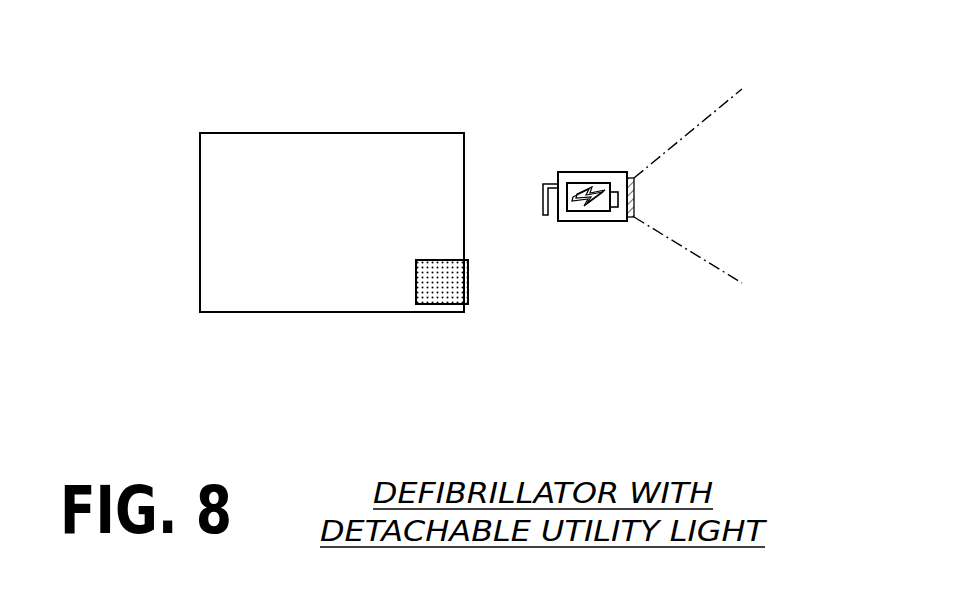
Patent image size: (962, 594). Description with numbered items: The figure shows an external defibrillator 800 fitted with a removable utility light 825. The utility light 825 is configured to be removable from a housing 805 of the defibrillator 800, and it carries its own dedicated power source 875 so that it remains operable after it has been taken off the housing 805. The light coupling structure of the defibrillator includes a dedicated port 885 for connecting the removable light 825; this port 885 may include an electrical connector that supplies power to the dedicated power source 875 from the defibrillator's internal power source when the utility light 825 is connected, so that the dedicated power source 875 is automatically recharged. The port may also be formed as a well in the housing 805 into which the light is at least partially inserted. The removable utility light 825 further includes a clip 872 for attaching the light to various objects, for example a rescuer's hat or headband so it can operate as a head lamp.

The external defibrillator 800 is at (349, 165).
The housing 805 is at (215, 312).
The removable utility light 825 is at (613, 172).
The clip 872 is at (543, 184).
The dedicated power source 875 is at (577, 215).
The dedicated port 885 is at (433, 308).